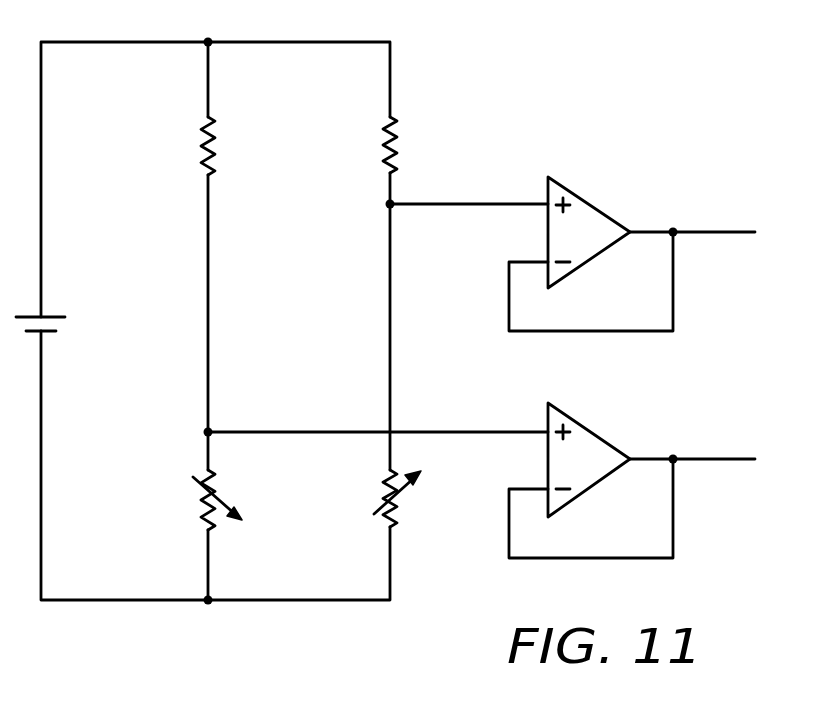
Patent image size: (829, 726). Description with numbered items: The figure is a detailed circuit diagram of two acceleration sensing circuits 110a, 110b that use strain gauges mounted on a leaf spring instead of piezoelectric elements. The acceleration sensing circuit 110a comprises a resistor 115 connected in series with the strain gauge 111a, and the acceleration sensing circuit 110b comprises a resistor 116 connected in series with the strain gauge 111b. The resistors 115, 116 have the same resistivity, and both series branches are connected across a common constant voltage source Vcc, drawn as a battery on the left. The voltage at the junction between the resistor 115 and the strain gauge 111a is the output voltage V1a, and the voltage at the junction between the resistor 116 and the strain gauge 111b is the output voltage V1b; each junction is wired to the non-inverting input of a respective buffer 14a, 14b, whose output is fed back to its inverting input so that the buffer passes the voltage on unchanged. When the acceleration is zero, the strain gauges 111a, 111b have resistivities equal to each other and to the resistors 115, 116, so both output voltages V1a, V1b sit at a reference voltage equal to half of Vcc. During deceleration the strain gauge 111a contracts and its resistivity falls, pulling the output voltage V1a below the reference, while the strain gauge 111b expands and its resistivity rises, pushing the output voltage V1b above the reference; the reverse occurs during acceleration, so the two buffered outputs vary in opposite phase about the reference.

The acceleration sensing circuit 110a is at (427, 107).
The acceleration sensing circuit 110b is at (237, 107).
The resistor 115 is at (388, 158).
The resistor 116 is at (206, 160).
The strain gauge 111a is at (388, 497).
The strain gauge 111b is at (207, 513).
The buffer 14a is at (575, 192).
The buffer 14b is at (576, 418).
The constant voltage source Vcc is at (58, 317).
The output voltage V1a is at (469, 185).
The output voltage V1b is at (378, 412).